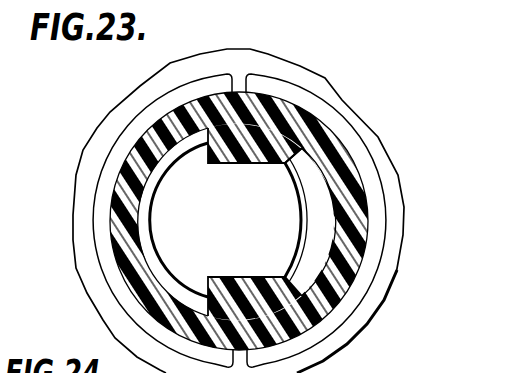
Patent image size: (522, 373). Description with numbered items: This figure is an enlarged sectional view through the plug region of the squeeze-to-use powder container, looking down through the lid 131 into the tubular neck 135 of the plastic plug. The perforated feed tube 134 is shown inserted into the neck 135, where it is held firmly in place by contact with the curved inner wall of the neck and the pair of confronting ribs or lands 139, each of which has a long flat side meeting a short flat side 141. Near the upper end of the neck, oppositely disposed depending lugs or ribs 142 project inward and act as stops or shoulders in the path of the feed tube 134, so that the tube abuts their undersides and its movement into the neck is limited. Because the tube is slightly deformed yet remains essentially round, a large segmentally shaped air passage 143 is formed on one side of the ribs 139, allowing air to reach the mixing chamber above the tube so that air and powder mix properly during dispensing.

The lid 131 is at (313, 84).
The perforated feed tube 134 is at (137, 273).
The tubular neck 135 is at (350, 288).
The ribs or lands 139 is at (298, 151).
The short flat side 141 is at (151, 205).
The depending lugs or ribs 142 is at (213, 164).
The segmentally shaped air passage 143 is at (333, 239).